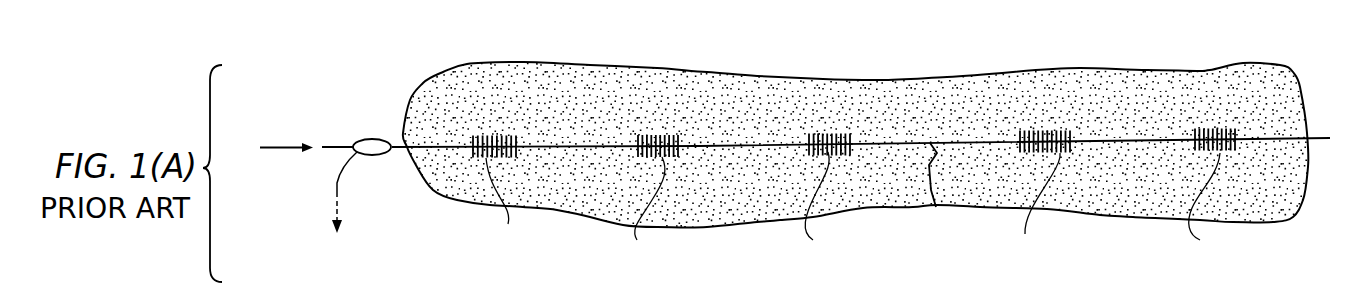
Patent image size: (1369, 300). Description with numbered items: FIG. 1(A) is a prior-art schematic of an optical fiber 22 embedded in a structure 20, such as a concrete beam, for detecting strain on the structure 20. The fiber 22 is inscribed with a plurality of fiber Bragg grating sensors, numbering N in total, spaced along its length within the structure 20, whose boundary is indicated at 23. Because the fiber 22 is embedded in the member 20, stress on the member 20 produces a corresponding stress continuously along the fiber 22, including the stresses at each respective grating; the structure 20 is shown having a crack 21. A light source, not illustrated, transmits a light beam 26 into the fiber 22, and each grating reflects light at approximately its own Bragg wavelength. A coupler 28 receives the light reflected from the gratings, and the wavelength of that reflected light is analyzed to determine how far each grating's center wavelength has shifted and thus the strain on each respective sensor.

The structure 20 is at (1107, 98).
The crack 21 is at (927, 199).
The fiber 22 is at (733, 143).
The surface of structure 23 is at (525, 63).
The light beam 26 is at (288, 149).
The coupler 28 is at (375, 156).